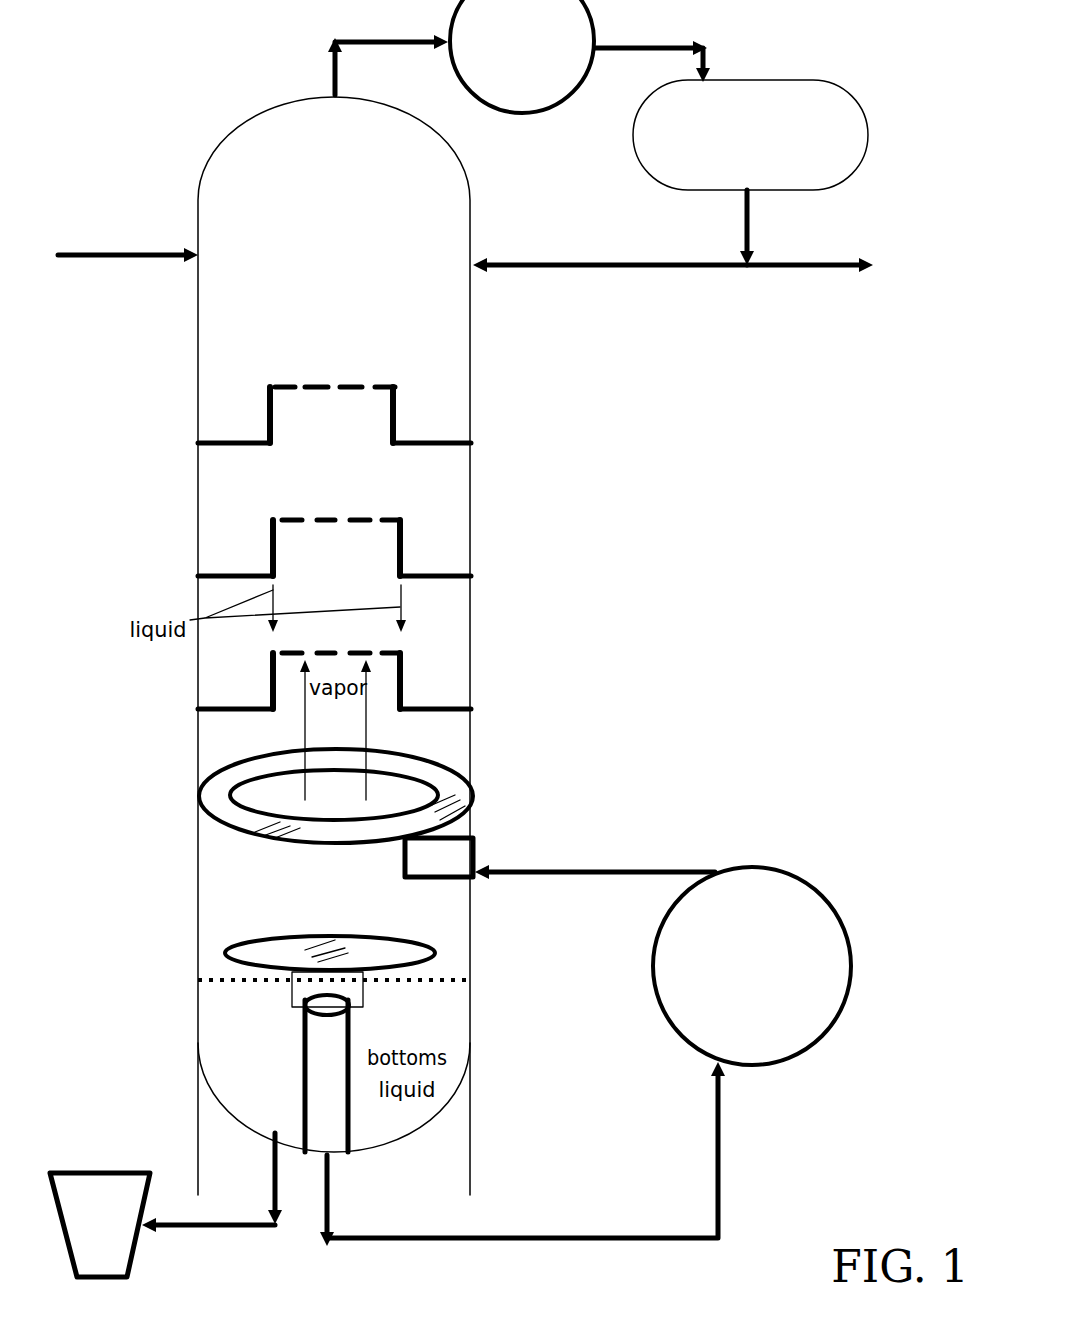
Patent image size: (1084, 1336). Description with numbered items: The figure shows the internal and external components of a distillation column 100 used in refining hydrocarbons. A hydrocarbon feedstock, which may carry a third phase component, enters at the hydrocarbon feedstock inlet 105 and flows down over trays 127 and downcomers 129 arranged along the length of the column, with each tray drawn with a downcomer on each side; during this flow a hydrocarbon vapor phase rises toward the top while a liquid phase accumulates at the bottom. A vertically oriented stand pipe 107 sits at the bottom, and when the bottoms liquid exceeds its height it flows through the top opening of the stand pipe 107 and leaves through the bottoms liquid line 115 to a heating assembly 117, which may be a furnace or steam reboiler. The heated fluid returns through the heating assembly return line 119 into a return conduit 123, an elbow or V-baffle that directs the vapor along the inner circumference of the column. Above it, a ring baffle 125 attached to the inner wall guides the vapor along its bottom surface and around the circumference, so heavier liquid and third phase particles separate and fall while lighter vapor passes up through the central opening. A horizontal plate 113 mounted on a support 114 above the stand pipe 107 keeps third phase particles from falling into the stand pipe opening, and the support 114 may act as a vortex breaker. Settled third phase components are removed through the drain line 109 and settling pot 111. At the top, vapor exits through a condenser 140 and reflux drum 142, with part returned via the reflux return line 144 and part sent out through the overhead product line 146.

The distillation column 100 is at (144, 38).
The hydrocarbon feedstock inlet 105 is at (120, 238).
The stand pipe 107 is at (320, 1130).
The drain line 109 is at (232, 1210).
The settling pot 111 is at (130, 1230).
The horizontal plate 113 is at (262, 950).
The support 114 is at (290, 995).
The bottoms liquid line 115 is at (522, 1154).
The heating assembly 117 is at (752, 966).
The heating assembly return line 119 is at (595, 912).
The return conduit 123 is at (448, 848).
The ring baffle 125 is at (218, 795).
The trays 127 is at (387, 520).
The downcomers 129 is at (272, 540).
The condenser 140 is at (580, 56).
The reflux drum 142 is at (750, 172).
The reflux return line 144 is at (610, 295).
The overhead product line 146 is at (826, 309).